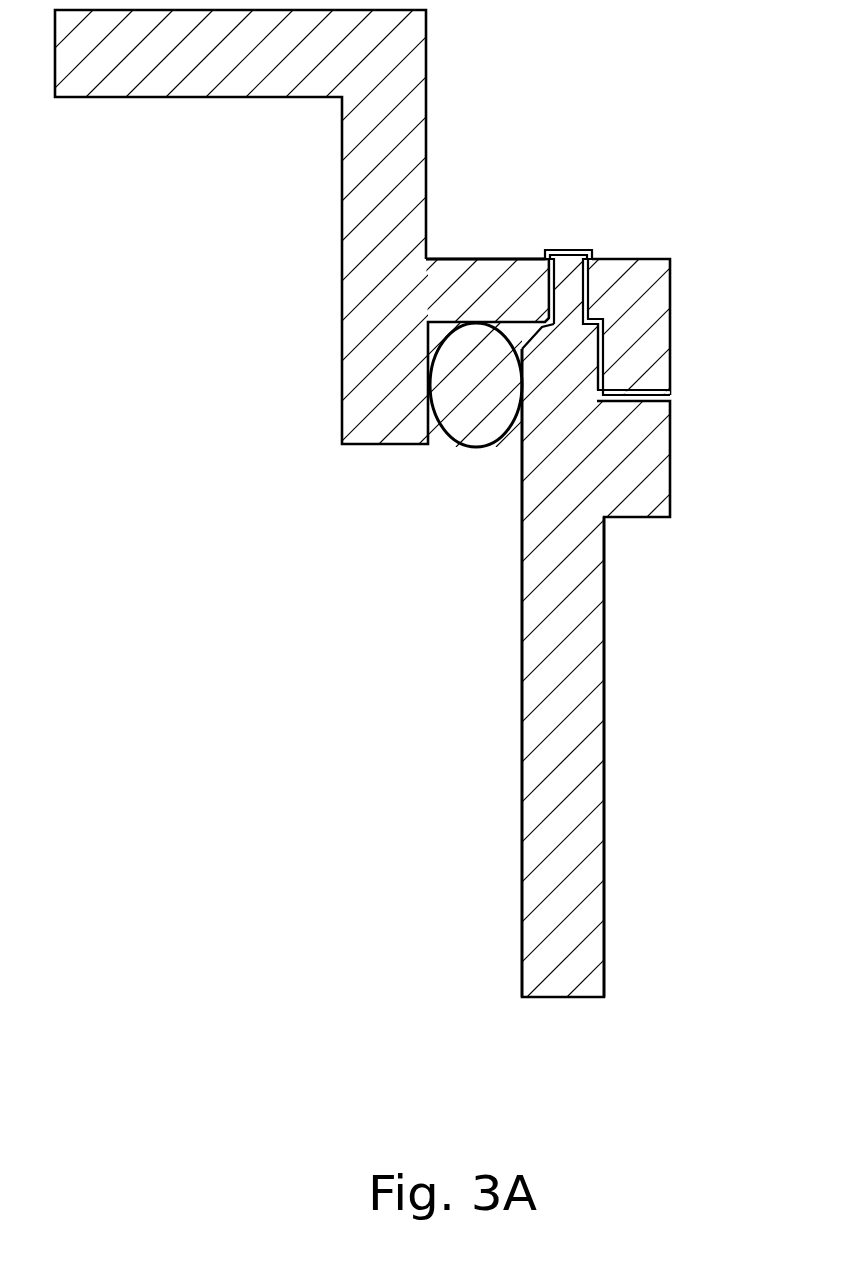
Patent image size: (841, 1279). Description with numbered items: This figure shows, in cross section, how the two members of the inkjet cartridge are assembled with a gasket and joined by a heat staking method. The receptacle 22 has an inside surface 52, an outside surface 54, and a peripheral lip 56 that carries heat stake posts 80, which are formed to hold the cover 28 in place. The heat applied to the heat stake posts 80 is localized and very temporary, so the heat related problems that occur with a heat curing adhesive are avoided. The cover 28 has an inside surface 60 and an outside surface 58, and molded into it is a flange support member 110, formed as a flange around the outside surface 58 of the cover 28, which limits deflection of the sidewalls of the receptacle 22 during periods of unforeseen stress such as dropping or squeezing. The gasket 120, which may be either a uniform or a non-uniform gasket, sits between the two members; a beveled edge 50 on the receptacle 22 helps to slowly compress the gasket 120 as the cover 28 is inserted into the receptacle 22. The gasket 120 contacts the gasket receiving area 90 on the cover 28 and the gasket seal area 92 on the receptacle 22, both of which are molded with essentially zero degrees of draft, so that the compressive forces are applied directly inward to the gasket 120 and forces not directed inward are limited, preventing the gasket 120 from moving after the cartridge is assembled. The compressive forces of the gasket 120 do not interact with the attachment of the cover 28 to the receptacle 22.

The receptacle 22 is at (628, 447).
The cover 28 is at (497, 272).
The beveled edge 50 is at (527, 360).
The inside surface 52 is at (523, 642).
The outside surface 54 is at (604, 623).
The peripheral lip 56 is at (570, 348).
The outside surface 58 is at (430, 337).
The inside surface 60 is at (342, 357).
The heat stake posts 80 is at (570, 249).
The gasket receiving area 90 is at (433, 418).
The gasket seal area 92 is at (518, 417).
The flange support member 110 is at (617, 312).
The gasket 120 is at (468, 373).